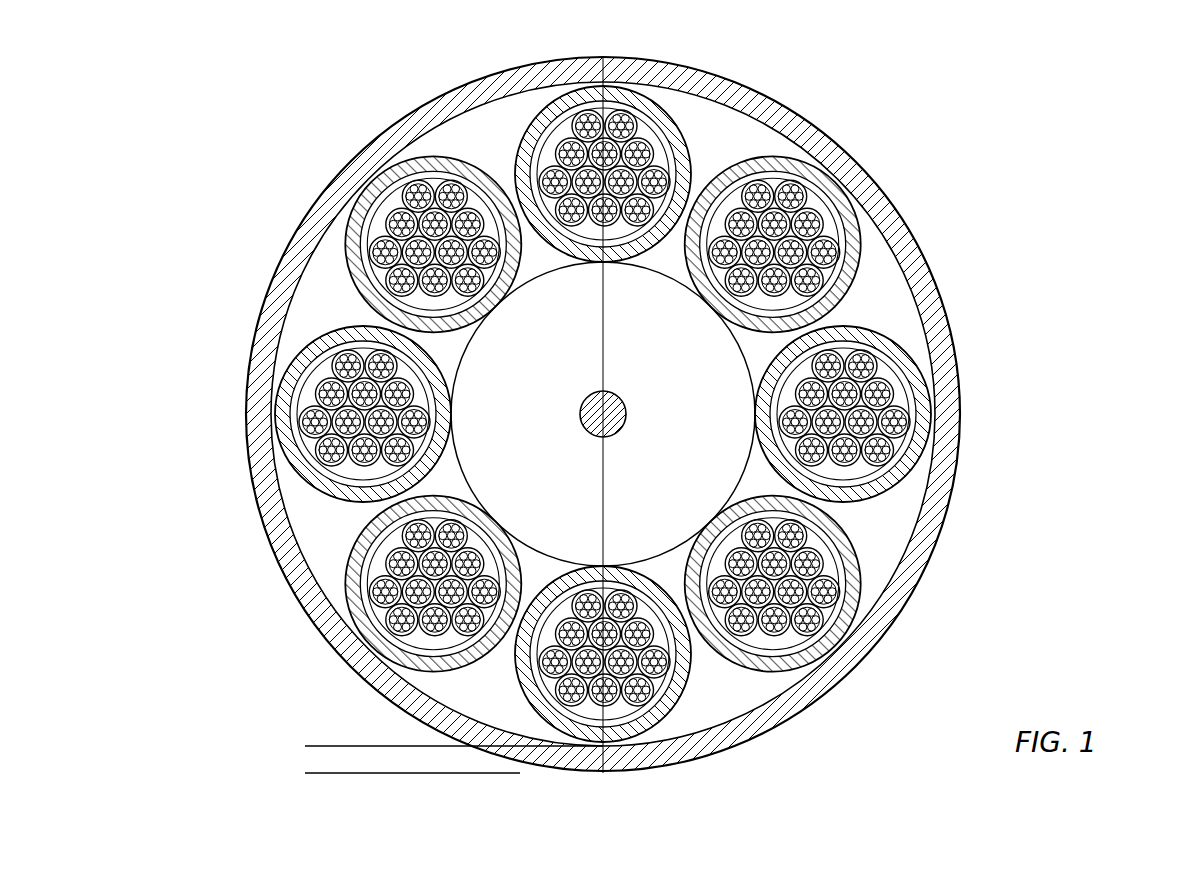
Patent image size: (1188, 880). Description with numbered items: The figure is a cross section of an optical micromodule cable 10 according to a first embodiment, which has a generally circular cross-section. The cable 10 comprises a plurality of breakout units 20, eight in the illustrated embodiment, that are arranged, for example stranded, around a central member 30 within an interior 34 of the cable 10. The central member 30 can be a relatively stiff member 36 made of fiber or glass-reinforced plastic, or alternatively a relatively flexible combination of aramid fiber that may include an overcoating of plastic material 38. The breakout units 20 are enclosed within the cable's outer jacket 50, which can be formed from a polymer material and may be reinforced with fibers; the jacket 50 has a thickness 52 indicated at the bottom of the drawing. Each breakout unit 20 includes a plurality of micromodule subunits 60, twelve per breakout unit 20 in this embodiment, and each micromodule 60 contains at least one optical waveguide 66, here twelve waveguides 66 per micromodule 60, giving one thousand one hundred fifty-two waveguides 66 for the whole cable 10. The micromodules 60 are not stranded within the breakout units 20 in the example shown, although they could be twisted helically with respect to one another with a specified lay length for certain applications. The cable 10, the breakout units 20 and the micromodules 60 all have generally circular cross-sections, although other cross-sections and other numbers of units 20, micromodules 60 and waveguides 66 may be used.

The optical micromodule cable 10 is at (1144, 71).
The breakout unit 20 is at (868, 516).
The central member 30 is at (712, 495).
The interior 34 is at (732, 693).
The relatively stiff member 36 is at (586, 410).
The overcoating of plastic material 38 is at (468, 455).
The outer jacket 50 is at (803, 112).
The thickness 52 is at (315, 685).
The micromodule subunit 60 is at (329, 393).
The optical waveguide 66 is at (383, 215).